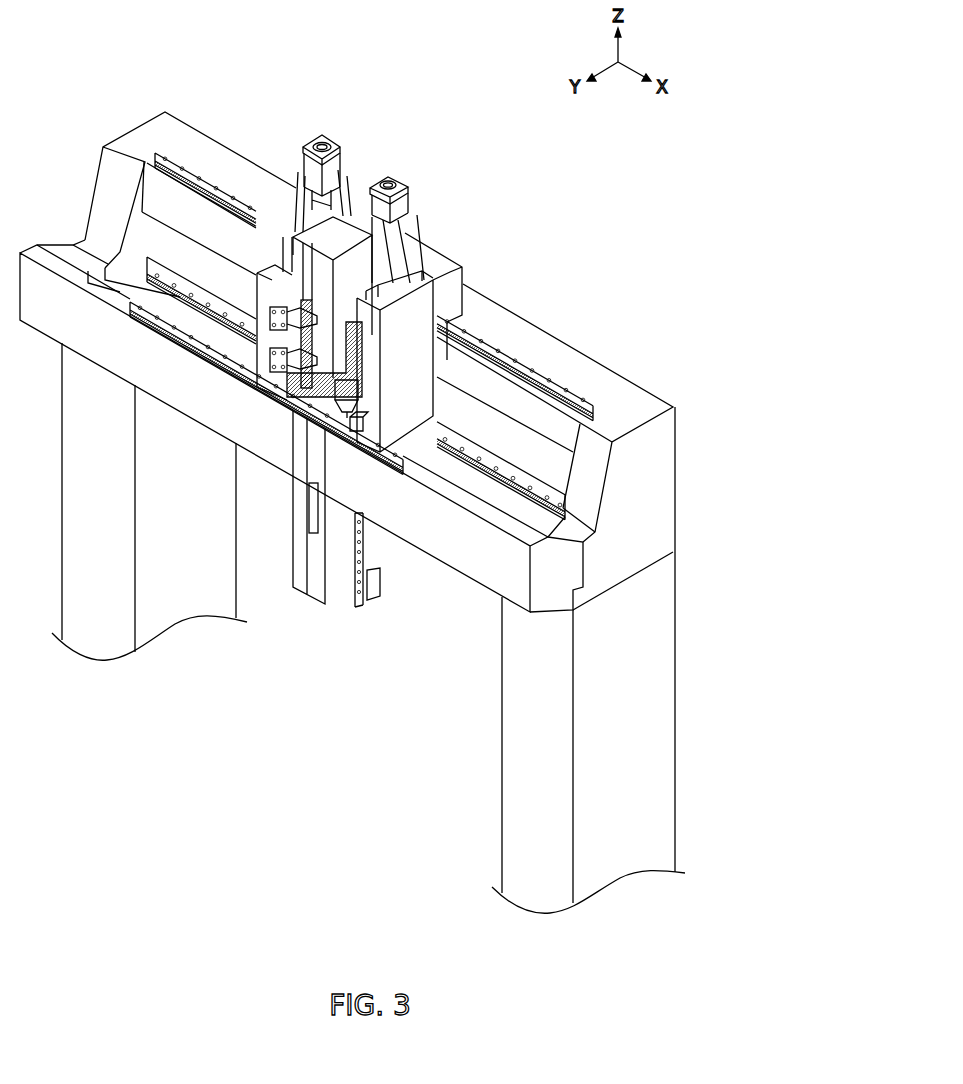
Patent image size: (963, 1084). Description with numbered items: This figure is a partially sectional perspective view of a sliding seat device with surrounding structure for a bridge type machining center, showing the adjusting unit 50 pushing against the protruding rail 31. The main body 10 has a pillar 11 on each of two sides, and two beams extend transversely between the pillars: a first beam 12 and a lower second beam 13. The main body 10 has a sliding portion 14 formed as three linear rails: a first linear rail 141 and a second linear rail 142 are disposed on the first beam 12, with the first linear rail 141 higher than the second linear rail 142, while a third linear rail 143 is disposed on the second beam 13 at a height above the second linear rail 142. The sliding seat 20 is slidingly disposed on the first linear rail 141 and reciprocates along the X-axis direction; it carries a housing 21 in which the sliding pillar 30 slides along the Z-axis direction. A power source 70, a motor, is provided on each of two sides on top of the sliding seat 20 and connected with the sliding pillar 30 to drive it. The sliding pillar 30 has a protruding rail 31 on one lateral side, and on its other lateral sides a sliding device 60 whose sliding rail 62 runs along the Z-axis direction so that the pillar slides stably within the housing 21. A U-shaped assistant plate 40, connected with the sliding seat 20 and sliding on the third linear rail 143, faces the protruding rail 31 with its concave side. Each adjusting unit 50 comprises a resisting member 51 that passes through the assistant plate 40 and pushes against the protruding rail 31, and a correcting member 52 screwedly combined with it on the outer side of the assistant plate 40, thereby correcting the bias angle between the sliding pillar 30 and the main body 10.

The main body 10 is at (622, 347).
The pillar 11 is at (77, 404).
The first beam 12 is at (651, 400).
The second beam 13 is at (477, 563).
The sliding portion 14 is at (157, 143).
The first linear rail 141 is at (202, 170).
The second linear rail 142 is at (553, 502).
The third linear rail 143 is at (403, 458).
The sliding seat 20 is at (462, 253).
The housing 21 is at (282, 287).
The sliding pillar 30 is at (350, 221).
The protruding rail 31 is at (296, 236).
The assistant plate 40 is at (314, 396).
The adjusting unit 50 is at (250, 360).
The resisting member 51 is at (372, 380).
The correcting member 52 is at (300, 378).
The sliding device 60 is at (348, 612).
The sliding rail 62 is at (350, 565).
The power source 70 is at (330, 127).